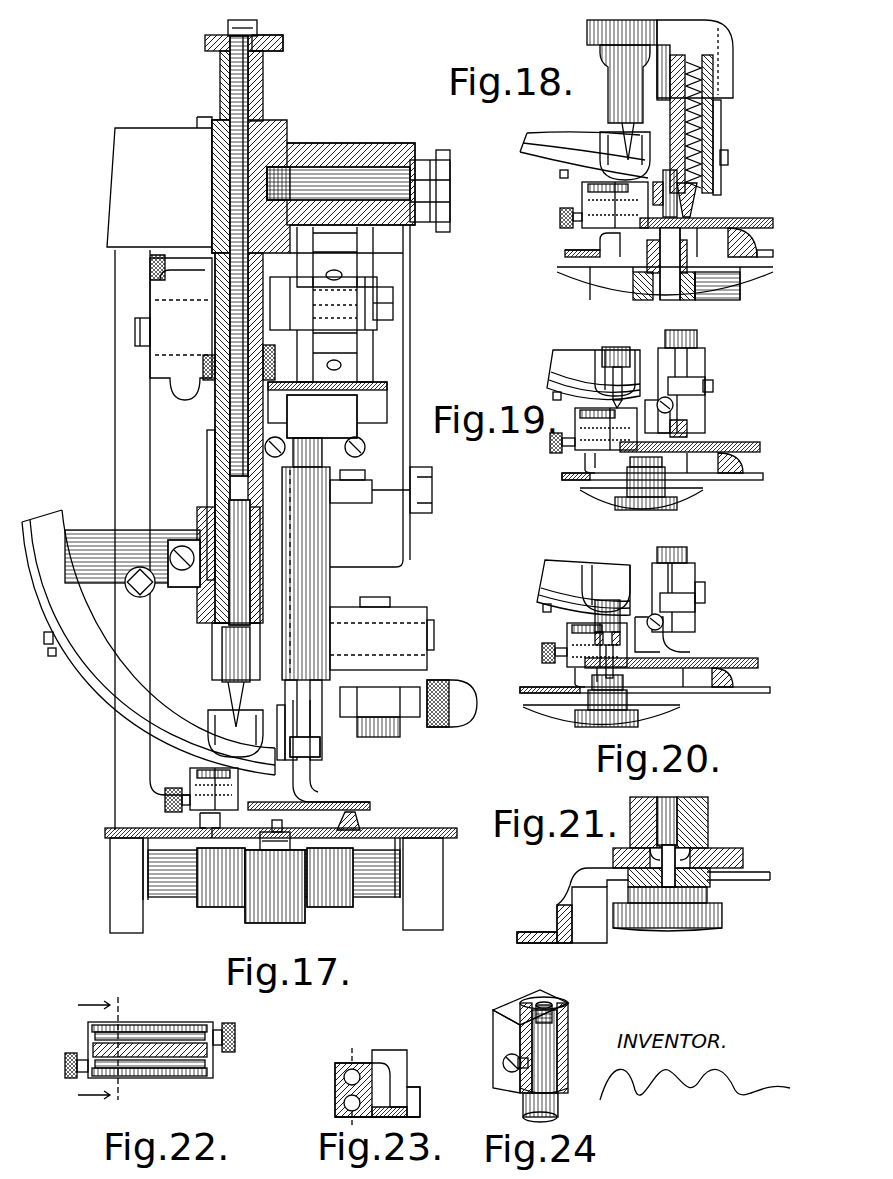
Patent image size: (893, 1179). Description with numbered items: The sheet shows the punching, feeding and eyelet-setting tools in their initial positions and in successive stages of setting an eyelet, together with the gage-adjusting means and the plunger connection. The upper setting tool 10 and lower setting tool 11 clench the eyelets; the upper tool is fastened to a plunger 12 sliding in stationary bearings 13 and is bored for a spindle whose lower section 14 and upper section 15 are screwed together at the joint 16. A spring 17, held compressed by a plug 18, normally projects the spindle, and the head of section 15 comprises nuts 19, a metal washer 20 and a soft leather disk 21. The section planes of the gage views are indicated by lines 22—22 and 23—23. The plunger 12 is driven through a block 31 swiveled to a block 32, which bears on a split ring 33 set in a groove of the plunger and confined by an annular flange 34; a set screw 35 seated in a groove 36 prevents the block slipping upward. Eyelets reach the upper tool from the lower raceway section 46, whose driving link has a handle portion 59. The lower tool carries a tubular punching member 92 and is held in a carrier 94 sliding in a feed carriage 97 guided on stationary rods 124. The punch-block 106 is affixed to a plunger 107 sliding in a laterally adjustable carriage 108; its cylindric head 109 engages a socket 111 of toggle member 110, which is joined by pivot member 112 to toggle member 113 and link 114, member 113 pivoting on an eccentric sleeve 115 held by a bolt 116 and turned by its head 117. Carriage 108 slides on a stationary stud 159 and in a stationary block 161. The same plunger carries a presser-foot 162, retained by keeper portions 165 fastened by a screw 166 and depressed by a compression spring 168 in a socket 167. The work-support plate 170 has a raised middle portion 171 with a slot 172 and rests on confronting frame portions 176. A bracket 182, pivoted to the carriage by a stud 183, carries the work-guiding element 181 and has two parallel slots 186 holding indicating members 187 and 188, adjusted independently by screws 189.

In FIG. 17, the upper eyelet-setting tool 10 is at (222, 690).
In FIG. 18, the upper eyelet-setting tool 10 is at (618, 108).
In FIG. 19, the upper eyelet-setting tool 10 is at (620, 357).
In FIG. 21, the upper eyelet-setting tool 10 is at (710, 815).
In FIG. 20, the lower eyelet-setting tool 11 is at (625, 675).
In FIG. 21, the lower eyelet-setting tool 11 is at (707, 887).
In FIG. 17, the plunger 12 is at (210, 462).
In FIG. 24, the plunger 12 is at (568, 1030).
In FIG. 17, the stationary bearings 13 is at (212, 176).
In FIG. 17, the spindle 14 is at (248, 712).
In FIG. 18, the spindle 14 is at (600, 135).
In FIG. 19, the spindle 14 is at (565, 385).
In FIG. 21, the spindle 14 is at (675, 805).
In FIG. 17, the upper spindle section 15 is at (263, 80).
In FIG. 17, the screw joint 16 is at (250, 553).
In FIG. 17, the spring 17 is at (217, 440).
In FIG. 17, the plug 18 is at (220, 80).
In FIG. 17, the nuts 19 is at (230, 24).
In FIG. 17, the metal disk or washer 20 is at (283, 43).
In FIG. 17, the soft disk 21 is at (205, 46).
In FIG. 23, the section line 22 is at (302, 1122).
In FIG. 22, the section line 23 is at (107, 1047).
In FIG. 17, the block 31 is at (148, 352).
In FIG. 17, the block 32 is at (210, 282).
In FIG. 24, the block 32 is at (557, 1003).
In FIG. 17, the split metallic ring 33 is at (212, 380).
In FIG. 24, the split metallic ring 33 is at (528, 1094).
In FIG. 17, the annular flange 34 is at (270, 380).
In FIG. 24, the annular flange 34 is at (560, 1083).
In FIG. 24, the set screw 35 is at (505, 1060).
In FIG. 24, the groove 36 is at (533, 1045).
In FIG. 17, the lower raceway section 46 is at (80, 680).
In FIG. 18, the lower raceway section 46 is at (543, 160).
In FIG. 17, the handle portion 59 is at (182, 545).
In FIG. 19, the punching member 92 is at (638, 452).
In FIG. 21, the punching member 92 is at (710, 830).
In FIG. 19, the carrier 94 is at (640, 480).
In FIG. 17, the feed carriage 97 is at (333, 908).
In FIG. 19, the feed carriage 97 is at (703, 487).
In FIG. 17, the punch-block 106 is at (258, 792).
In FIG. 18, the punch-block 106 is at (658, 215).
In FIG. 17, the plunger 107 is at (342, 677).
In FIG. 18, the plunger 107 is at (722, 138).
In FIG. 19, the plunger 107 is at (700, 340).
In FIG. 17, the laterally adjustable carriage 108 is at (330, 586).
In FIG. 18, the laterally adjustable carriage 108 is at (735, 80).
In FIG. 17, the cylindric head 109 is at (322, 416).
In FIG. 17, the toggle member 110 is at (373, 352).
In FIG. 17, the partially cylindric socket 111 is at (387, 412).
In FIG. 17, the pivot member 112 is at (395, 303).
In FIG. 17, the toggle member 113 is at (363, 257).
In FIG. 17, the link 114 is at (238, 250).
In FIG. 17, the eccentric sleeve 115 is at (325, 165).
In FIG. 17, the bolt 116 is at (380, 183).
In FIG. 17, the sleeve head 117 is at (425, 160).
In FIG. 17, the stationary rods 124 is at (173, 897).
In FIG. 17, the stationary stud 159 is at (434, 635).
In FIG. 17, the stationary block 161 is at (381, 490).
In FIG. 17, the presser-foot 162 is at (318, 798).
In FIG. 18, the presser-foot 162 is at (702, 205).
In FIG. 19, the presser-foot 162 is at (690, 433).
In FIG. 20, the presser-foot 162 is at (680, 650).
In FIG. 20, the keeper portions 165 is at (688, 605).
In FIG. 20, the screw 166 is at (705, 590).
In FIG. 18, the socket 167 is at (652, 164).
In FIG. 18, the compression spring 168 is at (713, 120).
In FIG. 17, the work-support plate 170 is at (410, 827).
In FIG. 20, the work-support plate 170 is at (740, 695).
In FIG. 21, the work-support plate 170 is at (555, 930).
In FIG. 17, the raised middle portion 171 is at (367, 823).
In FIG. 21, the slot 172 is at (583, 875).
In FIG. 17, the confronting frame portions 176 is at (117, 852).
In FIG. 23, the work-guiding element 181 is at (420, 1105).
In FIG. 17, the bracket 182 is at (367, 703).
In FIG. 23, the bracket 182 is at (393, 1055).
In FIG. 17, the pivot stud 183 is at (398, 735).
In FIG. 23, the parallel horizontal slots 186 is at (365, 1063).
In FIG. 22, the indicating member 187 is at (133, 1073).
In FIG. 23, the indicating member 187 is at (390, 1107).
In FIG. 22, the indicating member 188 is at (135, 1025).
In FIG. 23, the indicating member 188 is at (377, 1087).
In FIG. 19, the adjusting screws 189 is at (552, 447).
In FIG. 22, the adjusting screws 189 is at (177, 1025).
In FIG. 23, the adjusting screws 189 is at (335, 1100).